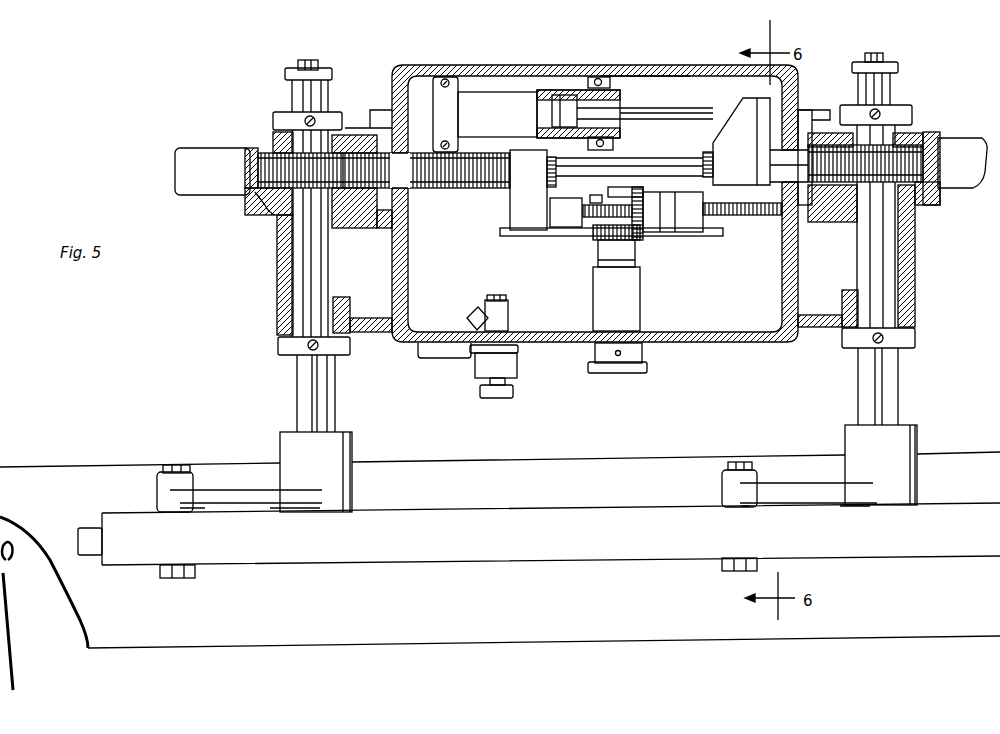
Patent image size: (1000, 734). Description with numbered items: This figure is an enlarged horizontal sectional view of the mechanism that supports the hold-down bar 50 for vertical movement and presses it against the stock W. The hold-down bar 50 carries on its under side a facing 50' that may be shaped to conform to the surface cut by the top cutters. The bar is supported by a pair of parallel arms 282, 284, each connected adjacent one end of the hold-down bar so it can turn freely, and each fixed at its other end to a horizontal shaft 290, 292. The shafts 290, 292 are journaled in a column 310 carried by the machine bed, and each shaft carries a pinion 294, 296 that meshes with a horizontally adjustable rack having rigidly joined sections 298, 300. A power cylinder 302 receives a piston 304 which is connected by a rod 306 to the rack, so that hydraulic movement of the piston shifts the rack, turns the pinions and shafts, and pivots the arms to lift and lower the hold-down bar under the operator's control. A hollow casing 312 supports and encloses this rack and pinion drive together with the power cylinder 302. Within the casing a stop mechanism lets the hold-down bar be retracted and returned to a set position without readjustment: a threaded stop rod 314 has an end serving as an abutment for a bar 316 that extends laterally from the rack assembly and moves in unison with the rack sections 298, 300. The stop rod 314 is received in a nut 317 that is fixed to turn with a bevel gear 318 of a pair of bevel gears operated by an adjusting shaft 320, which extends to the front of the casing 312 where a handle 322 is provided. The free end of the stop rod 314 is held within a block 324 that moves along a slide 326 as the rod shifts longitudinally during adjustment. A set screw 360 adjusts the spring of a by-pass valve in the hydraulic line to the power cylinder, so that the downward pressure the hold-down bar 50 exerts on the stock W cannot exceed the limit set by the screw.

The hold-down bar 50 is at (551, 543).
The facing 50' is at (81, 524).
The stock W is at (680, 634).
The arm 282 is at (260, 490).
The arm 284 is at (798, 486).
The horizontal shaft 290 is at (302, 385).
The horizontal shaft 292 is at (898, 385).
The pinion 294 is at (249, 150).
The pinion 296 is at (940, 142).
The rack section 298 is at (440, 187).
The rack section 300 is at (818, 148).
The power cylinder 302 is at (510, 90).
The piston 304 is at (560, 110).
The rod 306 is at (682, 100).
The column 310 is at (440, 67).
The hollow casing 312 is at (647, 74).
The stop rod 314 is at (735, 218).
The bar 316 is at (513, 222).
The nut 317 is at (690, 226).
The bevel gear 318 is at (636, 193).
The adjusting shaft 320 is at (630, 250).
The handle 322 is at (630, 372).
The block 324 is at (565, 227).
The slide 326 is at (592, 196).
The set screw 360 is at (498, 395).